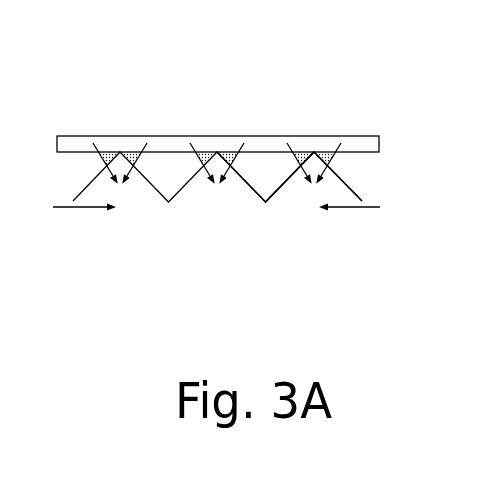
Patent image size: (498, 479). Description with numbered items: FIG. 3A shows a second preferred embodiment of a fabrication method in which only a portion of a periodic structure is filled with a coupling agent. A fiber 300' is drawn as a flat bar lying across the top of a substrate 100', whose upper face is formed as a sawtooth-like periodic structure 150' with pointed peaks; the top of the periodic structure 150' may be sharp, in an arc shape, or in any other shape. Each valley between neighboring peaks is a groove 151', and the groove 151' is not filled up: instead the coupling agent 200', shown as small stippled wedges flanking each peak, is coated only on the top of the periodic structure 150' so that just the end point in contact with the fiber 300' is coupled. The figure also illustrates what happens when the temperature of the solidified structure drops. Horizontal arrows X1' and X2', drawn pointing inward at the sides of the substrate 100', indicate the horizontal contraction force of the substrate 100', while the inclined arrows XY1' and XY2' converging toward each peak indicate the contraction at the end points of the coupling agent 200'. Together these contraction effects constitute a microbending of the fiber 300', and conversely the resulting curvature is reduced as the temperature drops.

The fiber 300' is at (218, 105).
The coupling agent 200' is at (217, 108).
The substrate 100' is at (217, 214).
The periodic structure 150' is at (317, 214).
The groove 151' is at (265, 214).
The arrow indicating contraction at end point of coupling agent XY2' is at (218, 117).
The arrow indicating contraction at end point of coupling agent XY1' is at (279, 120).
The arrow indicating horizontal contraction force of substrate X2' is at (64, 204).
The arrow indicating horizontal contraction force of substrate X1' is at (377, 206).